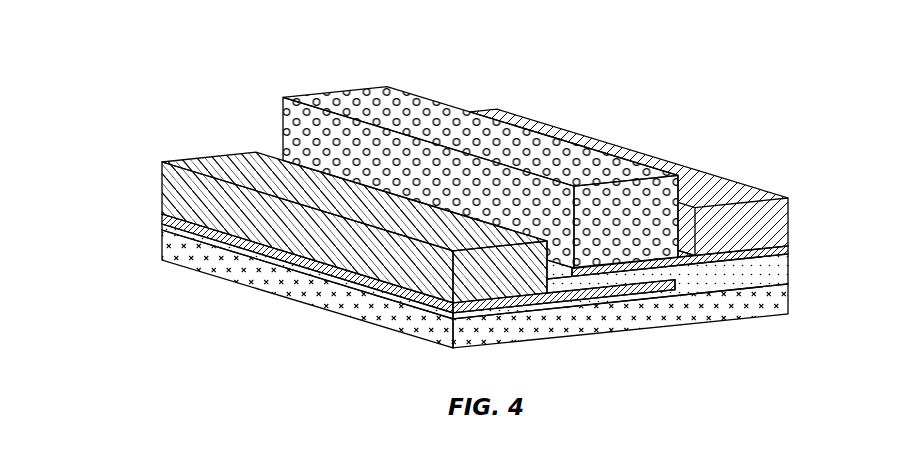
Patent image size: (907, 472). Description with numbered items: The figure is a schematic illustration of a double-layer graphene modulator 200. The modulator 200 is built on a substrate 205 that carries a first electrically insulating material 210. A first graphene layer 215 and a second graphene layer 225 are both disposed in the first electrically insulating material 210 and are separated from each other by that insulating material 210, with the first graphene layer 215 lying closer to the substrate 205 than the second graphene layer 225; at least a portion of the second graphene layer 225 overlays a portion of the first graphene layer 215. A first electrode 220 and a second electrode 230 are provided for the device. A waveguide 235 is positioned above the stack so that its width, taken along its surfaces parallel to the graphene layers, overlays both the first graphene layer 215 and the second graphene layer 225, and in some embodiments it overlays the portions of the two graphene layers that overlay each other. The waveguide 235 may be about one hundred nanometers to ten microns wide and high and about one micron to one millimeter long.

The double-layer graphene modulator 200 is at (662, 66).
The substrate 205 is at (773, 301).
The first electrically insulating material 210 is at (773, 270).
The first graphene layer 215 is at (165, 219).
The first electrode 220 is at (218, 163).
The second graphene layer 225 is at (773, 250).
The second electrode 230 is at (752, 197).
The waveguide 235 is at (394, 108).